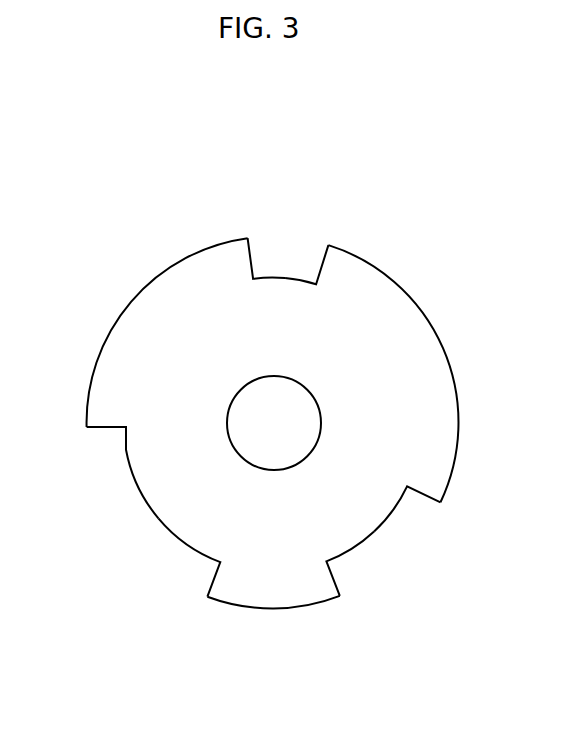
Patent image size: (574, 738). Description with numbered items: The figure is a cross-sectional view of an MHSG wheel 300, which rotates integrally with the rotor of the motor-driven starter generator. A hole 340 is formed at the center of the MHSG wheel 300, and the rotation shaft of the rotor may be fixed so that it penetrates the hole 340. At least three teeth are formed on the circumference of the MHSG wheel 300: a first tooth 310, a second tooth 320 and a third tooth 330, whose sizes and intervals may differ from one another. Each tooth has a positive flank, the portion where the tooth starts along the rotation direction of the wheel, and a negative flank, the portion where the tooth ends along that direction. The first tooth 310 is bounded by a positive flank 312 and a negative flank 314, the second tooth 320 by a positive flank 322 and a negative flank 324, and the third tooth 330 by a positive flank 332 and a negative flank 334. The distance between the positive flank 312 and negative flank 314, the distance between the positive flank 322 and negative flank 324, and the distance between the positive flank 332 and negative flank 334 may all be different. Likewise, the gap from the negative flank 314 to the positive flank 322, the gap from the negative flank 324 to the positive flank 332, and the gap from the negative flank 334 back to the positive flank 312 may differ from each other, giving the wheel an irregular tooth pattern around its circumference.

The MHSG wheel 300 is at (289, 164).
The first tooth 310 is at (110, 384).
The positive flank of the first tooth 312 is at (107, 433).
The negative flank of the first tooth 314 is at (254, 258).
The second tooth 320 is at (412, 332).
The positive flank of the second tooth 322 is at (320, 265).
The negative flank of the second tooth 324 is at (422, 500).
The third tooth 330 is at (271, 588).
The positive flank of the third tooth 332 is at (337, 573).
The negative flank of the third tooth 334 is at (210, 575).
The hole 340 is at (276, 415).